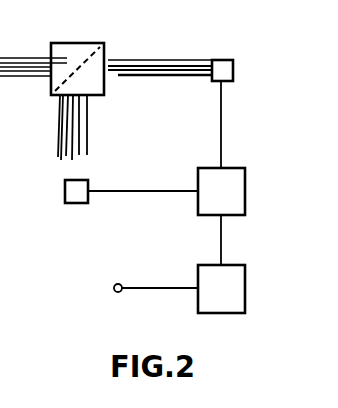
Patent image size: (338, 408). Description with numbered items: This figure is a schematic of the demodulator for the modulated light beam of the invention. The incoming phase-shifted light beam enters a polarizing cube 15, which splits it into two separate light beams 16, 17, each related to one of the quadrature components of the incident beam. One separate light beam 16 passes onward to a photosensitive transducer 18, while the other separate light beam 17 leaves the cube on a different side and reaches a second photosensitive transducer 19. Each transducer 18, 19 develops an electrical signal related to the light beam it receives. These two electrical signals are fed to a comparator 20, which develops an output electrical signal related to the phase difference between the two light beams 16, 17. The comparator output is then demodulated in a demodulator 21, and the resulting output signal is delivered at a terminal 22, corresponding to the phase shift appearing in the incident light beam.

The polarizing cube 15 is at (78, 43).
The separate light beam 16 is at (158, 60).
The separate light beam 17 is at (85, 123).
The photosensitive transducer 18 is at (222, 60).
The photosensitive transducer 19 is at (70, 203).
The comparator 20 is at (201, 199).
The demodulator 21 is at (202, 302).
The terminal 22 is at (115, 296).